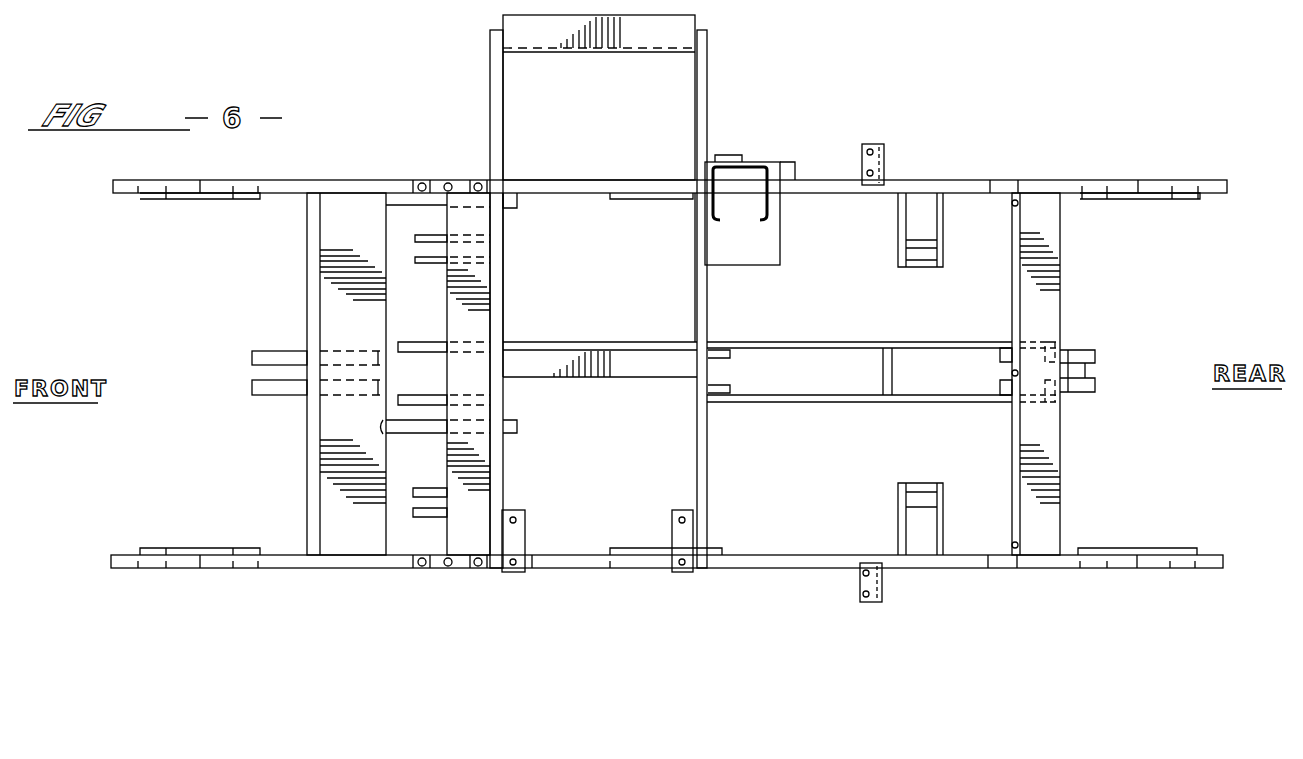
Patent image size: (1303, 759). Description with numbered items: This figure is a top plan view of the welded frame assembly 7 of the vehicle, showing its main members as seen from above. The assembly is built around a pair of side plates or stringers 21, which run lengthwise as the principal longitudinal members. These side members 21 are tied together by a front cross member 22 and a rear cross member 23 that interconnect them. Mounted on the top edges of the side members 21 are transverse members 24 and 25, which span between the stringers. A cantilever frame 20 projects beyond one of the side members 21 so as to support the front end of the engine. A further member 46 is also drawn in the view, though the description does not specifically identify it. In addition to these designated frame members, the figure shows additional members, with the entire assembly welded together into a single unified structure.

The welded frame assembly 7 is at (1219, 587).
The cantilever frame 20 is at (707, 80).
The side plates 21 is at (918, 180).
The front cross member 22 is at (1062, 268).
The rear cross member 23 is at (307, 259).
The transverse member 24 is at (505, 263).
The transverse member 25 is at (697, 263).
The cross beam 46 is at (850, 392).